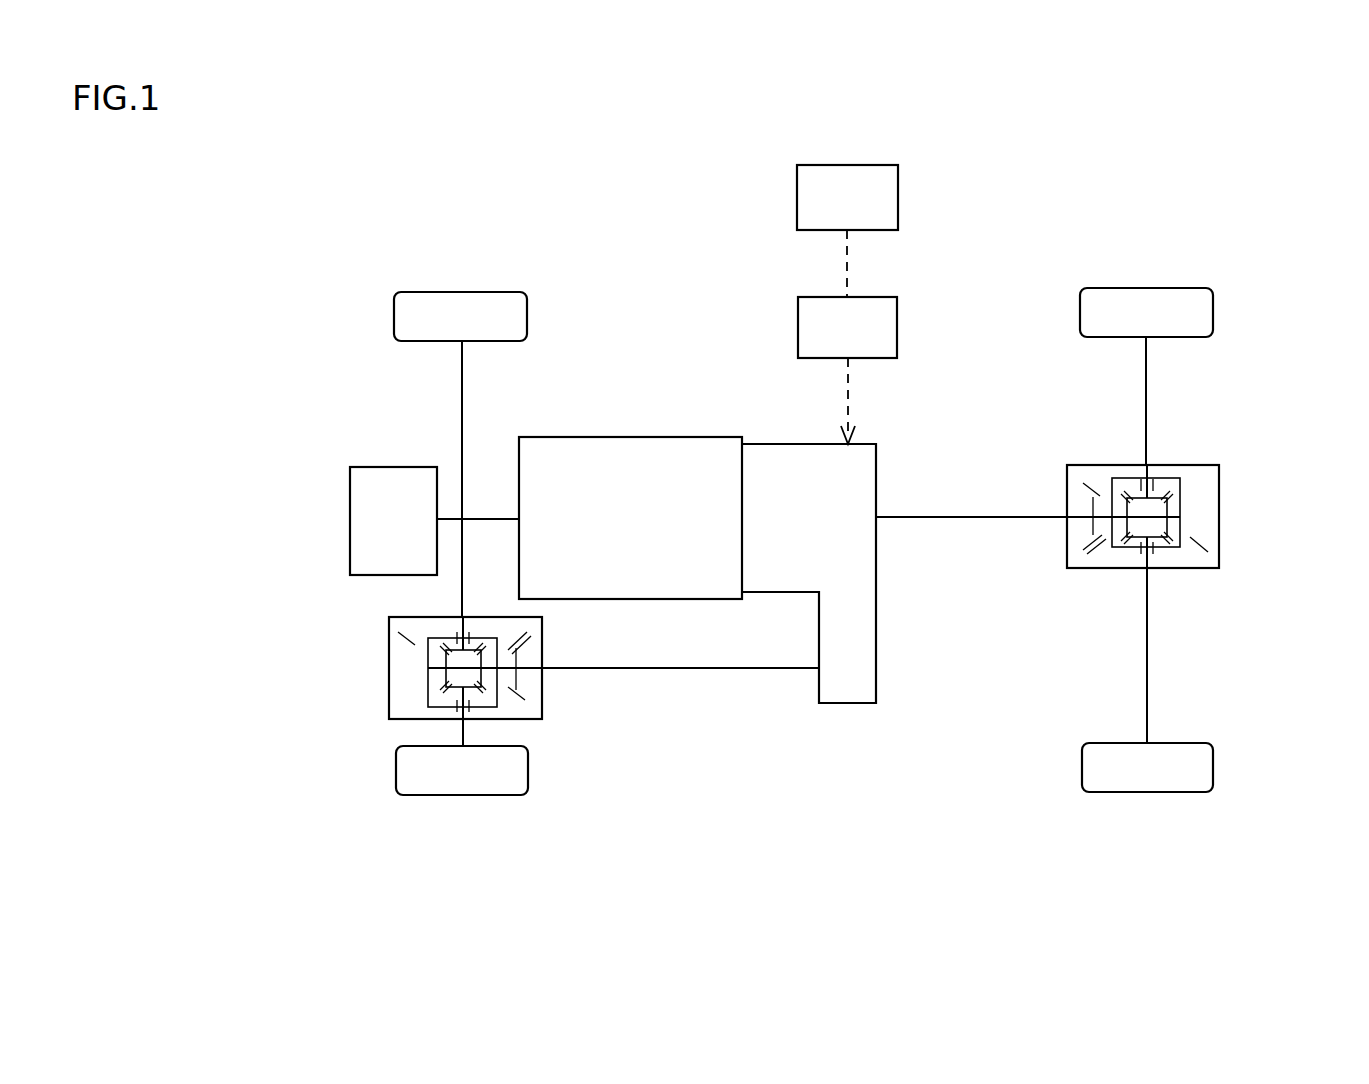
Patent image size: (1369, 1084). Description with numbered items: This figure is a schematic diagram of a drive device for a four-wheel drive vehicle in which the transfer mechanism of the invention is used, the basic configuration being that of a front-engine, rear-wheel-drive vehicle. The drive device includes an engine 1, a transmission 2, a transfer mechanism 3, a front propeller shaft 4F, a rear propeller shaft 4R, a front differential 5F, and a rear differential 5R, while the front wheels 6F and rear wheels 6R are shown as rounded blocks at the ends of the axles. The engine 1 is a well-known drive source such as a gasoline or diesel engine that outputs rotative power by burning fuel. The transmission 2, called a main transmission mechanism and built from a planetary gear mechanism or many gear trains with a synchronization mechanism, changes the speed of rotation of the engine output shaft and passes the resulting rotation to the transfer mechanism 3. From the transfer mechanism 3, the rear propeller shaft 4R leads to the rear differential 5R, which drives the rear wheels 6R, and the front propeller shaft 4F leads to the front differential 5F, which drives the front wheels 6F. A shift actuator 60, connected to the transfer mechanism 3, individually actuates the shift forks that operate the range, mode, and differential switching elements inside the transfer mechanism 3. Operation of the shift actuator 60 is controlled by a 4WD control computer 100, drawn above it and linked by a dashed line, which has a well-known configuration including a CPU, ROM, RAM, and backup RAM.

The engine 1 is at (350, 504).
The transmission 2 is at (633, 437).
The transfer mechanism 3 is at (877, 468).
The front propeller shaft 4F is at (728, 668).
The rear propeller shaft 4R is at (992, 520).
The front differential 5F is at (389, 685).
The rear differential 5R is at (1221, 513).
The front wheels 6F is at (400, 313).
The rear wheels 6R is at (1205, 297).
The shift actuator 60 is at (897, 323).
The 4WD control computer 100 is at (847, 231).